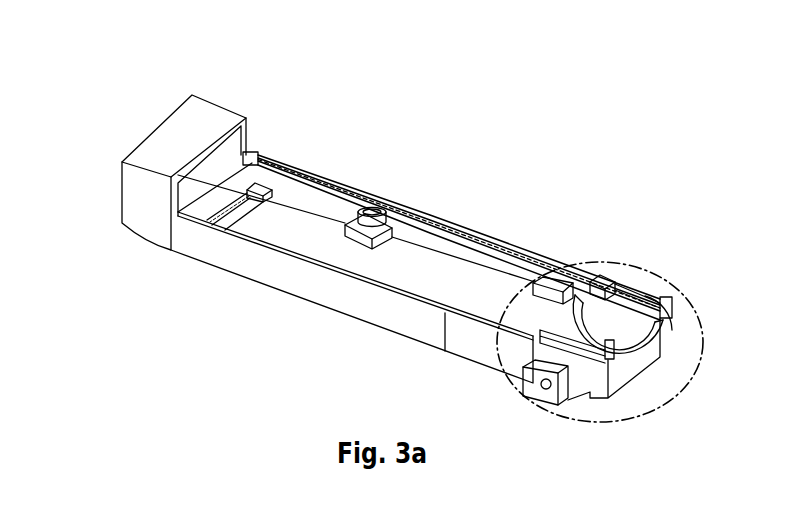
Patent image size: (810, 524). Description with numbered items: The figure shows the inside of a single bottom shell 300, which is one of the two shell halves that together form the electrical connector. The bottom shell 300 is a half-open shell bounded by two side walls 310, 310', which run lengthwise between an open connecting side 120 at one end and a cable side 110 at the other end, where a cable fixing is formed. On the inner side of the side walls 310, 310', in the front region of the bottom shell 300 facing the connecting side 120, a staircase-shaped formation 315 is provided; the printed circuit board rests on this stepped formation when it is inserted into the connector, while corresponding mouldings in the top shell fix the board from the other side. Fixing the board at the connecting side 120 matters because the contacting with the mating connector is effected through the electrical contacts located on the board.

The bottom shell 300 is at (449, 139).
The connecting side 120 is at (93, 148).
The side wall 310 is at (353, 290).
The side wall 310' is at (457, 230).
The staircase-shaped formation 315 is at (373, 223).
The cable side 110 is at (653, 394).